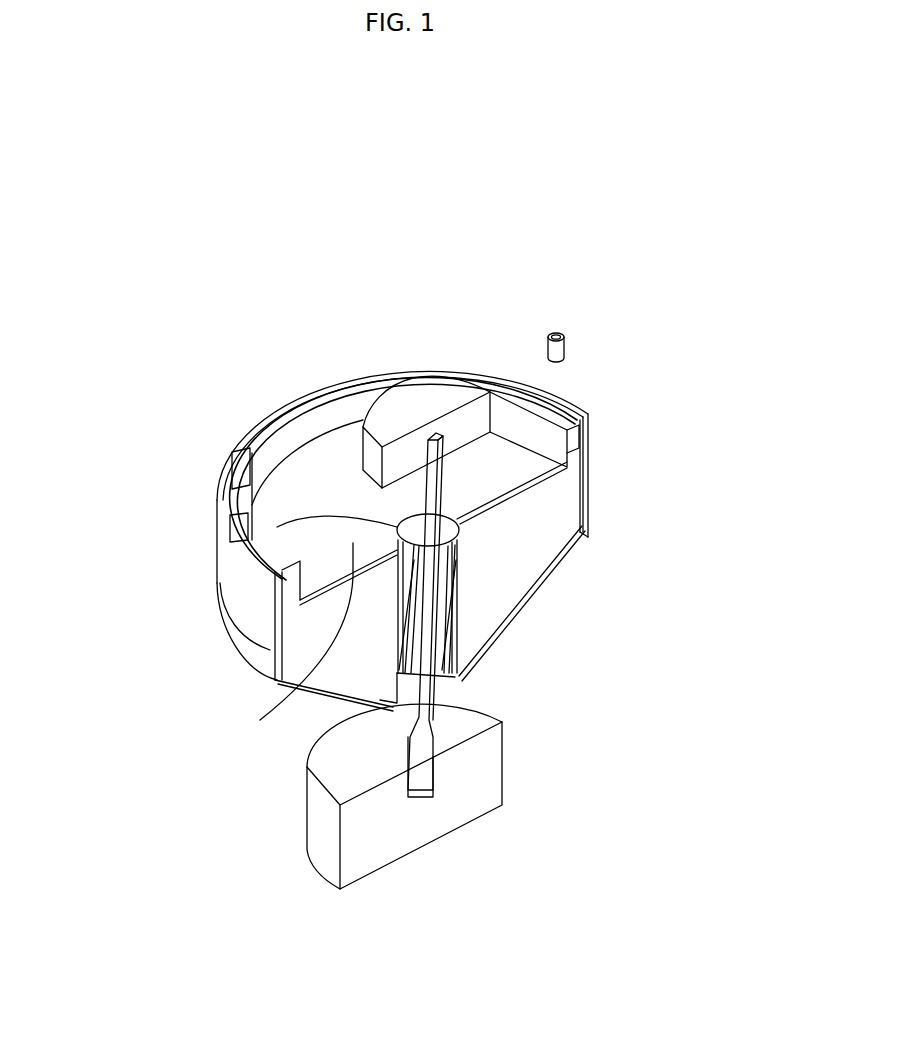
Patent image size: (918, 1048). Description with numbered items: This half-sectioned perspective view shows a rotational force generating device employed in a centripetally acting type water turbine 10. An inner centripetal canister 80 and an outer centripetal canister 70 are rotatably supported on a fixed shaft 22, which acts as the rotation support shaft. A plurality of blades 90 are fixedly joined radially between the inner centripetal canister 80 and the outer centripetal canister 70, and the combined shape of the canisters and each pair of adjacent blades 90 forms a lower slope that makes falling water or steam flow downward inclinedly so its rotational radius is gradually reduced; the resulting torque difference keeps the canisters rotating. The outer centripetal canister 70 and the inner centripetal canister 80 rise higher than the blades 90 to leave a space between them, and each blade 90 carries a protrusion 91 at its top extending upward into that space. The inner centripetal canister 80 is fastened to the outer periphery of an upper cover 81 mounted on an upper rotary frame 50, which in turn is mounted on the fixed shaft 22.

The centripetally acting type water turbine 10 is at (271, 219).
The fixed shaft 22 is at (433, 747).
The upper rotary frame 50 is at (267, 527).
The outer centripetal canister 70 is at (269, 409).
The inner centripetal canister 80 is at (327, 383).
The upper cover 81 is at (340, 655).
The blade 90 is at (507, 570).
The protrusion 91 is at (573, 447).